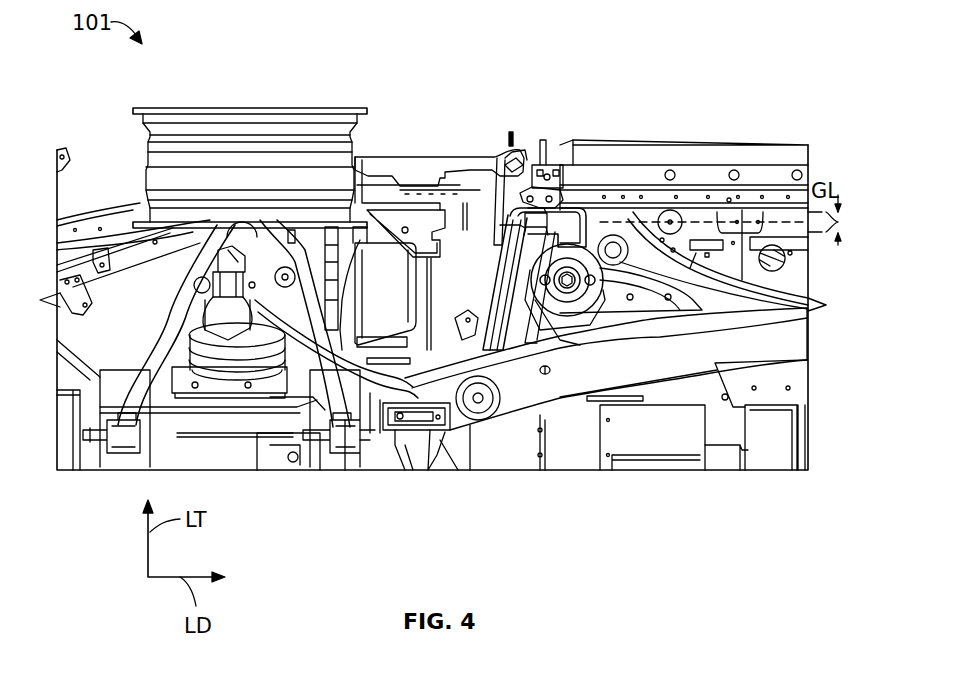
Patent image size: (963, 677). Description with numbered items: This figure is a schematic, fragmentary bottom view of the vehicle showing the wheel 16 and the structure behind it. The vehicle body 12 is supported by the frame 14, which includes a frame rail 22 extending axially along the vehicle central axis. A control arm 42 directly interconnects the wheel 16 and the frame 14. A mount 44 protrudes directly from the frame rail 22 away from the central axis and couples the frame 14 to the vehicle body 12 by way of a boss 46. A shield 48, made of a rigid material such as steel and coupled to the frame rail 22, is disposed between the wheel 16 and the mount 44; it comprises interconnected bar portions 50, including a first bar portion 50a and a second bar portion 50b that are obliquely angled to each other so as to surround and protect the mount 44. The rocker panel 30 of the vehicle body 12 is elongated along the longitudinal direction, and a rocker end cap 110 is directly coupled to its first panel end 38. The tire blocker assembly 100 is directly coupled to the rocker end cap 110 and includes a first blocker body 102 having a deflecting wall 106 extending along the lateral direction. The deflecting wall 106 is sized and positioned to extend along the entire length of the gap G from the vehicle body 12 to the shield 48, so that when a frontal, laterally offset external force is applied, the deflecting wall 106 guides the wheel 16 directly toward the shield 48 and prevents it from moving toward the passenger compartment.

The wheel 16 is at (207, 108).
The vehicle body 12 is at (370, 156).
The tire blocker assembly 100 is at (505, 160).
The first blocker body 102 is at (495, 198).
The deflecting wall 106 is at (497, 243).
The rocker end cap 110 is at (547, 157).
The shield 48 is at (548, 210).
The first panel end 38 is at (563, 232).
The second bar portion 50b is at (598, 240).
The mount 44 is at (628, 222).
The rocker panel 30 is at (752, 153).
The gap G is at (747, 278).
The control arm 42 is at (168, 314).
The bar portions 50 is at (497, 297).
The first bar portion 50a is at (487, 352).
The boss 46 is at (567, 293).
The frame 14 is at (668, 322).
The frame rail 22 is at (797, 348).